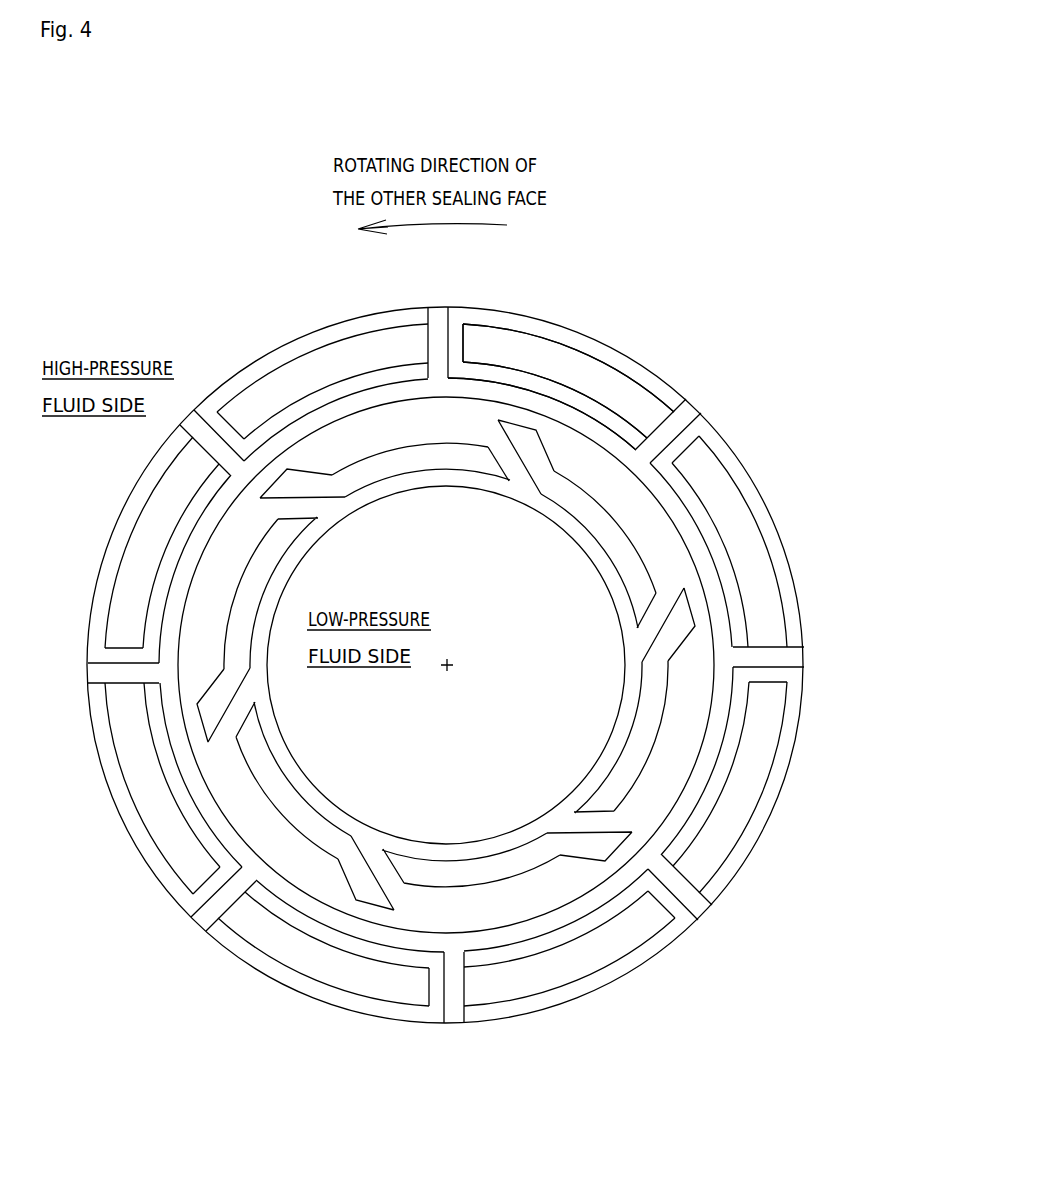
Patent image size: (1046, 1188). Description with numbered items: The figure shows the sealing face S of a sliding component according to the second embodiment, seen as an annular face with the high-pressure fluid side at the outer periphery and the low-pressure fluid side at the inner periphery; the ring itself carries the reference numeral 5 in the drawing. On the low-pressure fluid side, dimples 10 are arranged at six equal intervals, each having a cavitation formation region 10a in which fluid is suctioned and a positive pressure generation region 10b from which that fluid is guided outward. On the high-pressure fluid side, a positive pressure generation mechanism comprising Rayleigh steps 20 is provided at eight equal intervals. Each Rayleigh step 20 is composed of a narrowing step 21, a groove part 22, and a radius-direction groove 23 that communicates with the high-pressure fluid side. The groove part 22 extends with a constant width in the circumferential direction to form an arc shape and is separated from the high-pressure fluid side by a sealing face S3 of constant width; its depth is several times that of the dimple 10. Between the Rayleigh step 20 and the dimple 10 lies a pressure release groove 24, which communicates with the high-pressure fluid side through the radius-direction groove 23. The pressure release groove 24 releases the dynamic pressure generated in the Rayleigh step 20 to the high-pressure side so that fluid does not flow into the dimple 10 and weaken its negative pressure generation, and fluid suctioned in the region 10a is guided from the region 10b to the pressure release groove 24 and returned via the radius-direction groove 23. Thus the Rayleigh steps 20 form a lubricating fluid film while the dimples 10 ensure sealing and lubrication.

The sealing face ring (sliding component) 5 is at (345, 315).
The dimple 10 is at (385, 493).
The cavitation formation region 10a is at (451, 458).
The positive pressure generation region 10b is at (301, 484).
The Rayleigh step 20 is at (302, 346).
The narrowing step 21 is at (257, 403).
The groove part 22 is at (399, 350).
The radius-direction groove 23 is at (439, 335).
The pressure release groove 24 is at (575, 340).
The sealing face S is at (652, 530).
The sealing face S3 is at (238, 402).